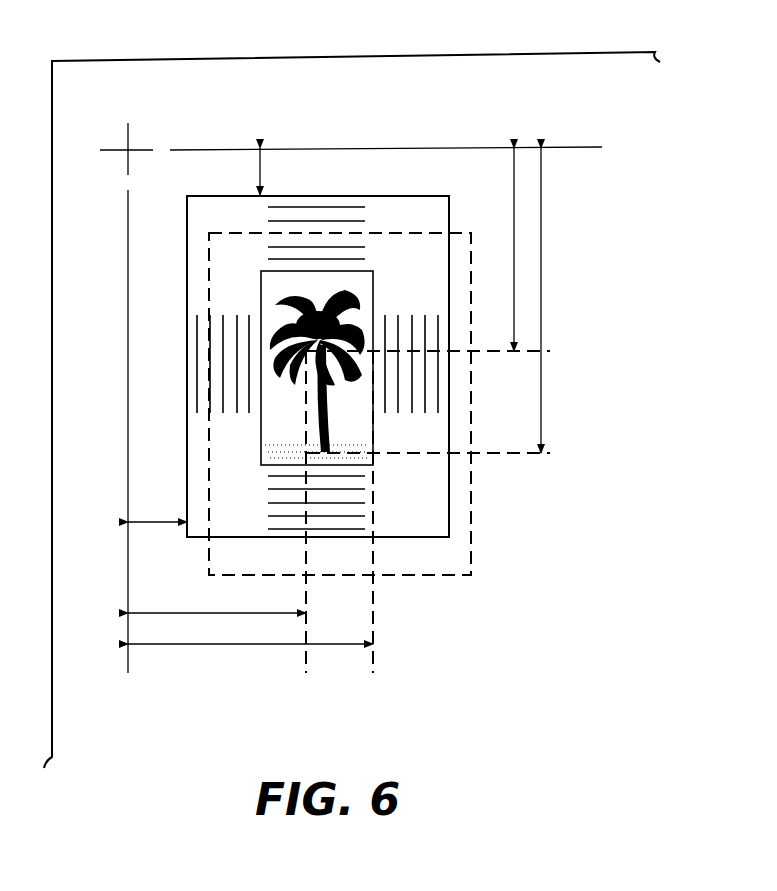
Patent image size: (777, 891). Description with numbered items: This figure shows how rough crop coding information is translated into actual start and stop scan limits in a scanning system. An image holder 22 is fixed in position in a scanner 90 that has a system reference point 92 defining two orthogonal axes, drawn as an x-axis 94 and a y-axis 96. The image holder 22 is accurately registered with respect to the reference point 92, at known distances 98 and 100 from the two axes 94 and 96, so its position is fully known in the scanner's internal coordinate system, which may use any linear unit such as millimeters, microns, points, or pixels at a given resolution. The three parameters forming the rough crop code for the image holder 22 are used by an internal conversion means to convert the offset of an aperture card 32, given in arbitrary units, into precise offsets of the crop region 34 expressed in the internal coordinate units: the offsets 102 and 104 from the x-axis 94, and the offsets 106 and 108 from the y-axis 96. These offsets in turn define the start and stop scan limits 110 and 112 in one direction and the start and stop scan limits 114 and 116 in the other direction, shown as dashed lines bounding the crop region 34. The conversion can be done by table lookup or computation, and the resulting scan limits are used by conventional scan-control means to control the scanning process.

The scanner 90 is at (184, 58).
The system reference point 92 is at (130, 148).
The x-axis 94 is at (128, 380).
The y-axis 96 is at (431, 147).
The known distance 98 is at (155, 522).
The known distance 100 is at (265, 173).
The offset 102 is at (190, 612).
The offset 104 is at (168, 646).
The offset 106 is at (514, 217).
The offset 108 is at (545, 230).
The start scan limit 110 is at (306, 655).
The stop scan limit 112 is at (373, 655).
The start scan limit 114 is at (545, 354).
The stop scan limit 116 is at (545, 450).
The image holder 22 is at (187, 440).
The aperture card 32 is at (471, 573).
The crop region 34 is at (373, 455).